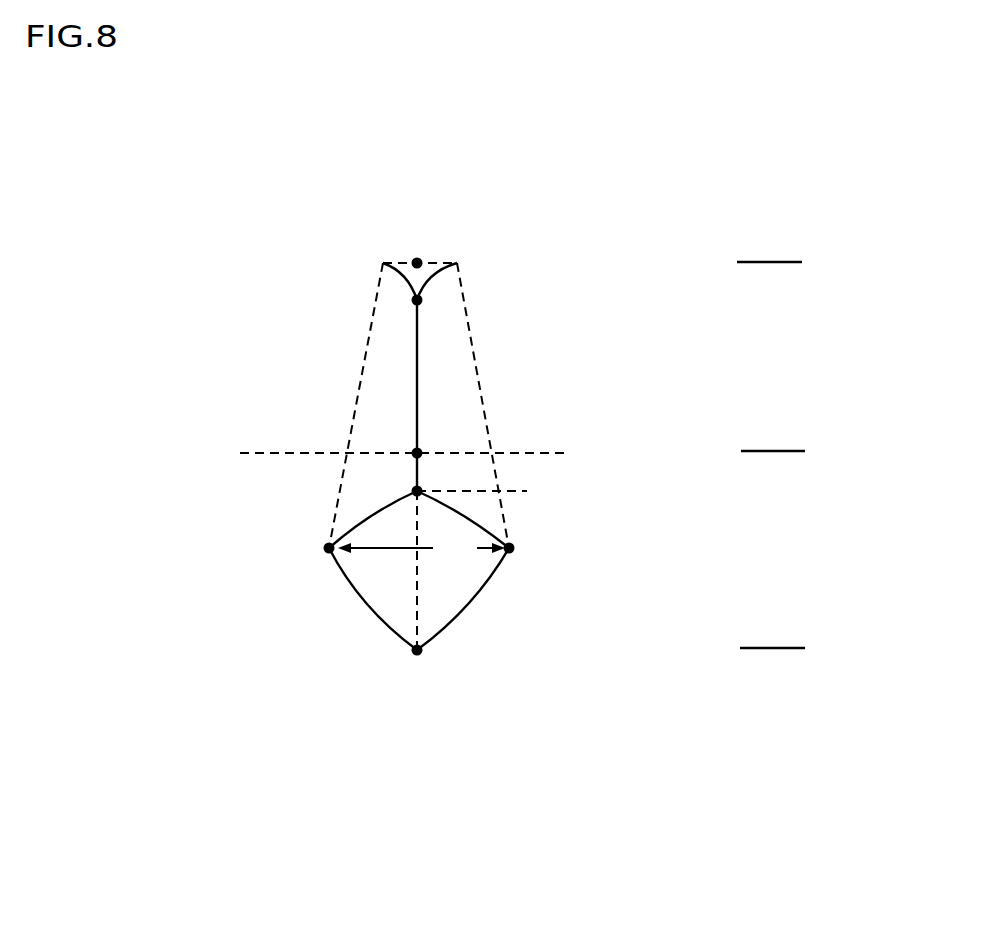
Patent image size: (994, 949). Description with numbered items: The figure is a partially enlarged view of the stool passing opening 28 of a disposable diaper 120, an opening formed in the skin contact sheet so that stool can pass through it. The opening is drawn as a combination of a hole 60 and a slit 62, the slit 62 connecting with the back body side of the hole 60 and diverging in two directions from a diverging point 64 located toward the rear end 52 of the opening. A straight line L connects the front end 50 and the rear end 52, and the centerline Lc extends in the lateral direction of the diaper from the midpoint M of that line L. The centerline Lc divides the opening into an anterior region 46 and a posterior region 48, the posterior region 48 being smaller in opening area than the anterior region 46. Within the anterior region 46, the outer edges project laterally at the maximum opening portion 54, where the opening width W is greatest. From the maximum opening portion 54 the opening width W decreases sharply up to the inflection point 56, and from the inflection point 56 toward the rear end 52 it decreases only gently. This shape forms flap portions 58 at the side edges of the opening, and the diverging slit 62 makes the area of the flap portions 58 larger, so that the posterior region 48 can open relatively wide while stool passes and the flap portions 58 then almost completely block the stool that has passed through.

The disposable diaper 120 is at (638, 183).
The stool passing opening 28 is at (187, 505).
The anterior region 46 is at (768, 455).
The posterior region 48 is at (768, 265).
The front end 50 is at (417, 674).
The rear end 52 is at (417, 237).
The maximum opening portion 54 is at (549, 548).
The inflection point 56 is at (548, 491).
The flap portions 58 is at (382, 398).
The hole 60 is at (370, 597).
The slit 62 is at (417, 413).
The diverging point 64 is at (400, 309).
The midpoint M is at (429, 429).
The opening width W is at (421, 549).
The straight line L is at (418, 588).
The centerline Lc is at (432, 451).